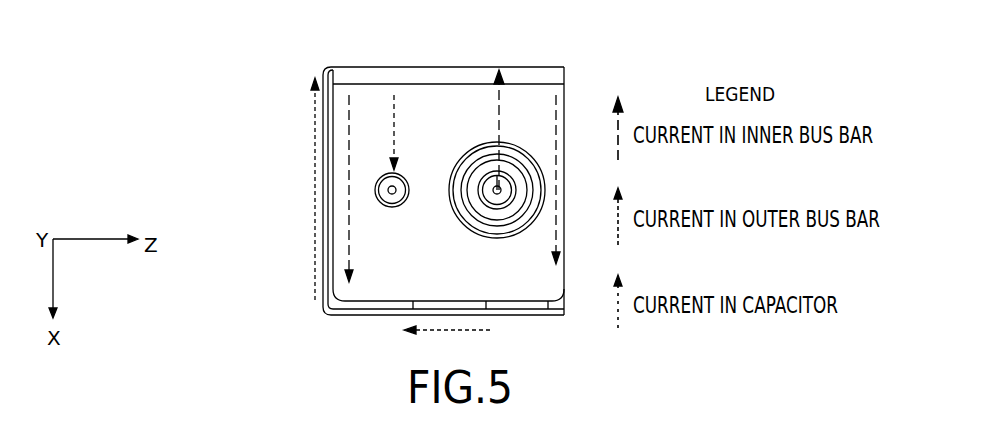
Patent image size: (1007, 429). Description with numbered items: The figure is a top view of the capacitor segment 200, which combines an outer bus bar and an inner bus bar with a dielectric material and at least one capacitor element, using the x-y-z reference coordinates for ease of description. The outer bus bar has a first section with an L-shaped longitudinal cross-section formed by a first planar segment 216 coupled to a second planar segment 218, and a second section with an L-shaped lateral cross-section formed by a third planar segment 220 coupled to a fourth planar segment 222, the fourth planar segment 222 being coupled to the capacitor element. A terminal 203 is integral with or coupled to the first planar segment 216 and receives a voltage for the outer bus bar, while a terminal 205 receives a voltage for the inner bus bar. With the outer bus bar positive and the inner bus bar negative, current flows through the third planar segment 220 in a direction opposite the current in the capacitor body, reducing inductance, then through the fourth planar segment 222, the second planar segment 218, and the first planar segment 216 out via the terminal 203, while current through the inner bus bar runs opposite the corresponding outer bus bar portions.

The capacitor segment 200 is at (238, 86).
The terminal 203 is at (388, 190).
The terminal 205 is at (502, 190).
The first planar segment 216 is at (547, 281).
The second planar segment 218 is at (443, 66).
The third planar segment 220 is at (322, 265).
The fourth planar segment 222 is at (528, 315).